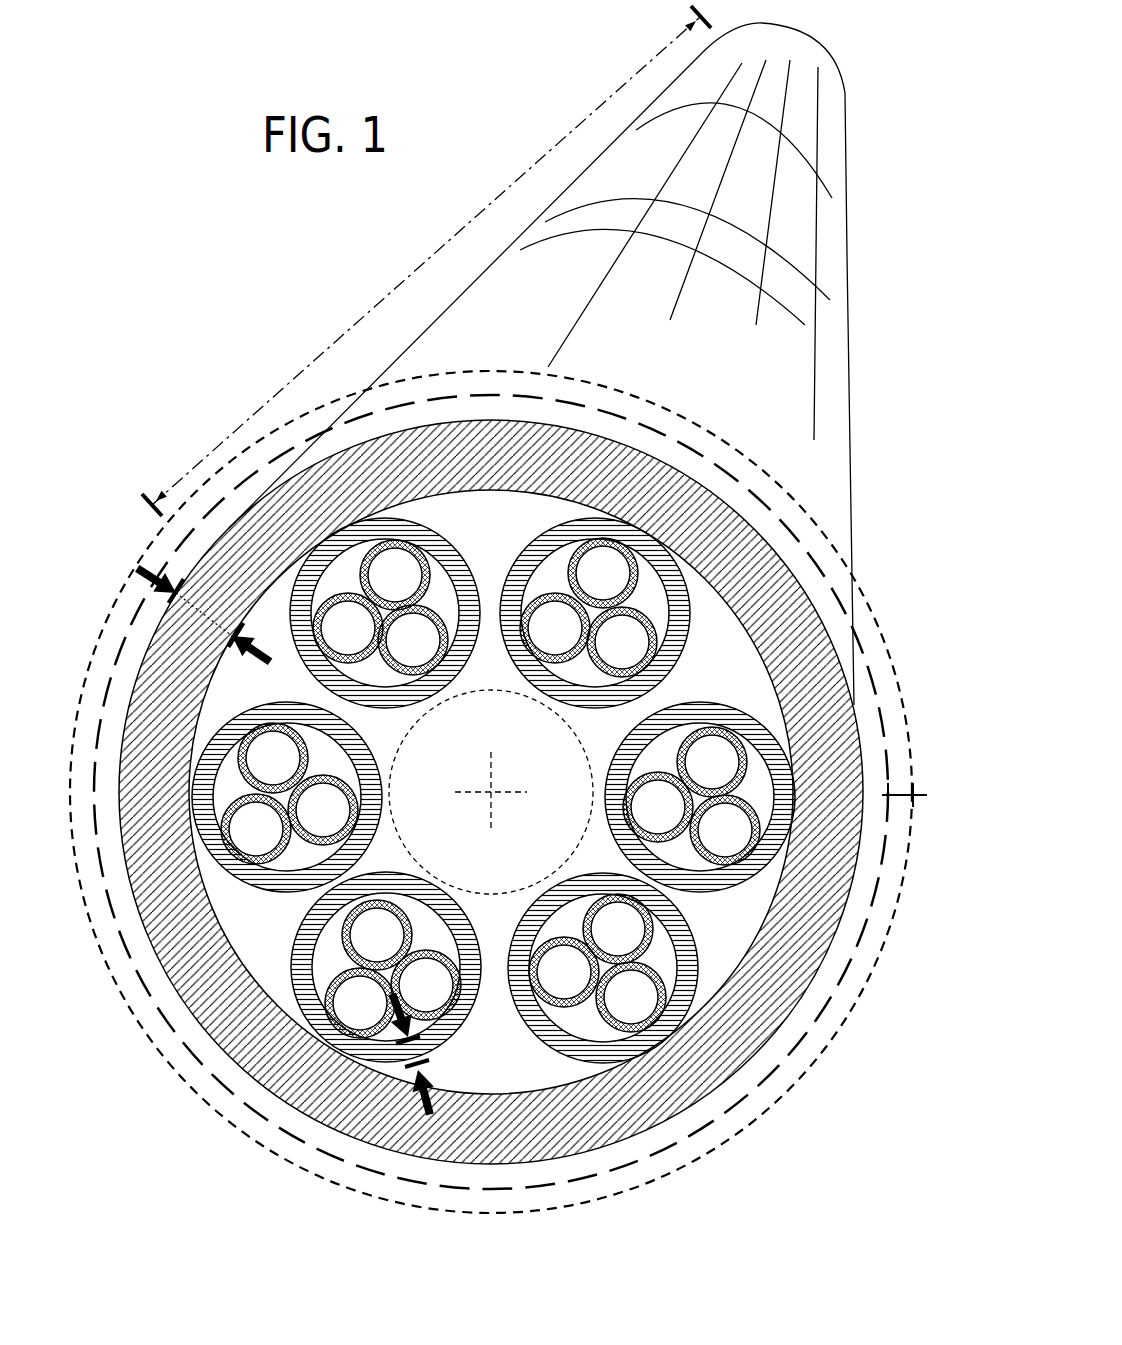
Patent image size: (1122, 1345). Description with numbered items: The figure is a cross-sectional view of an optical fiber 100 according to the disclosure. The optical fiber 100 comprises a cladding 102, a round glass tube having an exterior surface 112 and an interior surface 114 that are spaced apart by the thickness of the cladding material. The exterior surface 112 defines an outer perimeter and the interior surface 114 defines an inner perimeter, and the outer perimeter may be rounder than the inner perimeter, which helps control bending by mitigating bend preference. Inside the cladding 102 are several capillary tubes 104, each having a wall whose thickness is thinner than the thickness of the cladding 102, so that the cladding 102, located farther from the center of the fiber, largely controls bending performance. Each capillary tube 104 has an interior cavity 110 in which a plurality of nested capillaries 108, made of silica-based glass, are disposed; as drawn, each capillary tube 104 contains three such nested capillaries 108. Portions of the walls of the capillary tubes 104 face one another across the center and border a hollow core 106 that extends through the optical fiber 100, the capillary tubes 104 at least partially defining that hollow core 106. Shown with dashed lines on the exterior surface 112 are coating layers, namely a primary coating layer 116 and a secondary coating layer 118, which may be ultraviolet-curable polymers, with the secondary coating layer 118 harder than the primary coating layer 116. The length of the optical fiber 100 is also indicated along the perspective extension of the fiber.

The optical fiber 100 is at (912, 452).
The cladding 102 is at (780, 558).
The capillary tube 104 is at (692, 930).
The hollow core 106 is at (578, 735).
The nested capillary 108 is at (655, 630).
The interior cavity 110 is at (653, 595).
The exterior surface 112 is at (747, 1067).
The interior surface 114 is at (733, 977).
The primary coating layer 116 is at (933, 792).
The secondary coating layer 118 is at (887, 877).